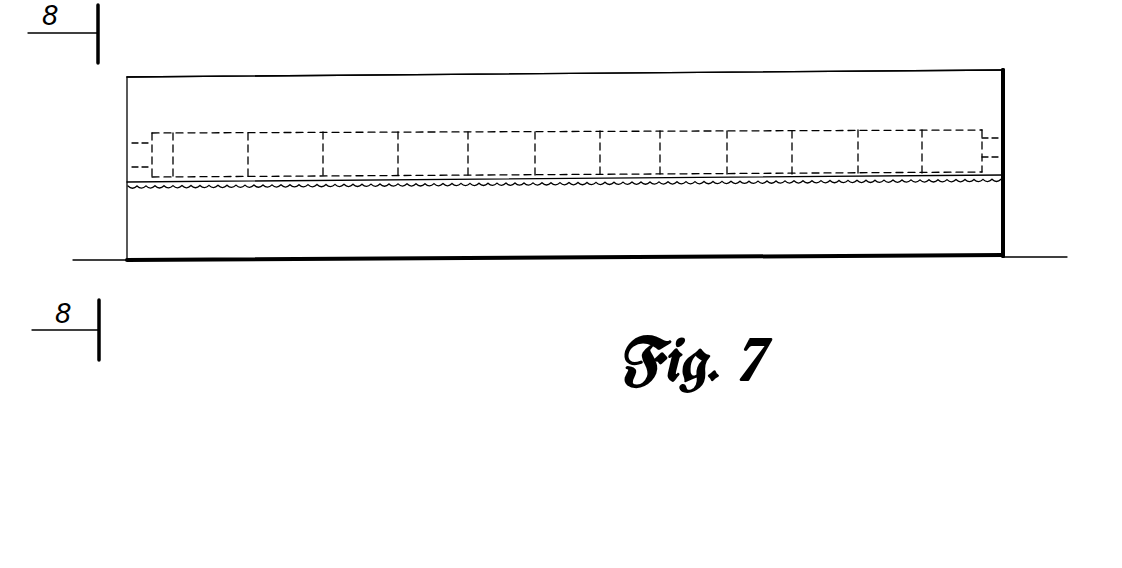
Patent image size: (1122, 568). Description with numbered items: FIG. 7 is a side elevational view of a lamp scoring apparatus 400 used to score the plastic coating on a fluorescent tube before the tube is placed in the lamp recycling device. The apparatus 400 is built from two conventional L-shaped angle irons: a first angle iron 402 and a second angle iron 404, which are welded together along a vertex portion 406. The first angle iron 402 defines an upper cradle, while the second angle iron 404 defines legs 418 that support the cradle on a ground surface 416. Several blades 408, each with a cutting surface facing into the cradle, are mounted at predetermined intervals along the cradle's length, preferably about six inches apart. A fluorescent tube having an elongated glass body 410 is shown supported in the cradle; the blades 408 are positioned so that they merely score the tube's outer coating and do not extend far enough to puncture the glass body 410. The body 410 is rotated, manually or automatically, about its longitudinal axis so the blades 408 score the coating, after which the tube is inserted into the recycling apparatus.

The lamp scoring apparatus 400 is at (845, 58).
The first angle iron 402 is at (503, 247).
The second angle iron 404 is at (523, 78).
The vertex portion 406 is at (245, 190).
The blades 408 is at (174, 158).
The glass body 410 is at (947, 125).
The ground surface 416 is at (1025, 258).
The legs 418 is at (987, 210).